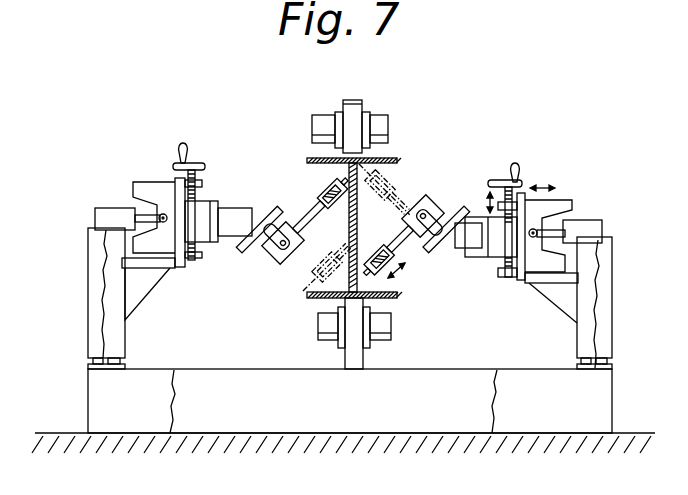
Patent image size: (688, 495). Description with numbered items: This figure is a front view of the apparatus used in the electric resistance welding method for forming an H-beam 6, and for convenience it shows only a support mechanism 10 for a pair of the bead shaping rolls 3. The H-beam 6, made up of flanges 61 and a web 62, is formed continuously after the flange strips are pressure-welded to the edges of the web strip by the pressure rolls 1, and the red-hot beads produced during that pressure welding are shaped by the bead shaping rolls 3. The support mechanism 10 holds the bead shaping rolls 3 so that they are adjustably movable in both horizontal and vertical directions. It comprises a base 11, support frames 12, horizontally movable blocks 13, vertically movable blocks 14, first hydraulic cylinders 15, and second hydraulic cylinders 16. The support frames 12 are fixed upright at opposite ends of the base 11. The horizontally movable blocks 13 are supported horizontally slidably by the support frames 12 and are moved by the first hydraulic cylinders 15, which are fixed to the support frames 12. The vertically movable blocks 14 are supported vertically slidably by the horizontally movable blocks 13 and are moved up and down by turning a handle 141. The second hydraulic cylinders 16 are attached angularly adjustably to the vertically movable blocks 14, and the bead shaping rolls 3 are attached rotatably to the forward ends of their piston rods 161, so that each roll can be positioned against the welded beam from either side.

The pressure rolls 1 is at (355, 100).
The bead shaping rolls 3 is at (355, 240).
The H-beam 6 is at (359, 201).
The flanges 61 is at (303, 158).
The web 62 is at (348, 213).
The support mechanism 10 is at (371, 221).
The base 11 is at (452, 428).
The support frames 12 is at (612, 270).
The horizontally movable blocks 13 is at (562, 200).
The vertically movable blocks 14 is at (470, 216).
The handle 141 is at (522, 167).
The first hydraulic cylinders 15 is at (600, 221).
The second hydraulic cylinders 16 is at (443, 197).
The piston rods 161 is at (405, 247).